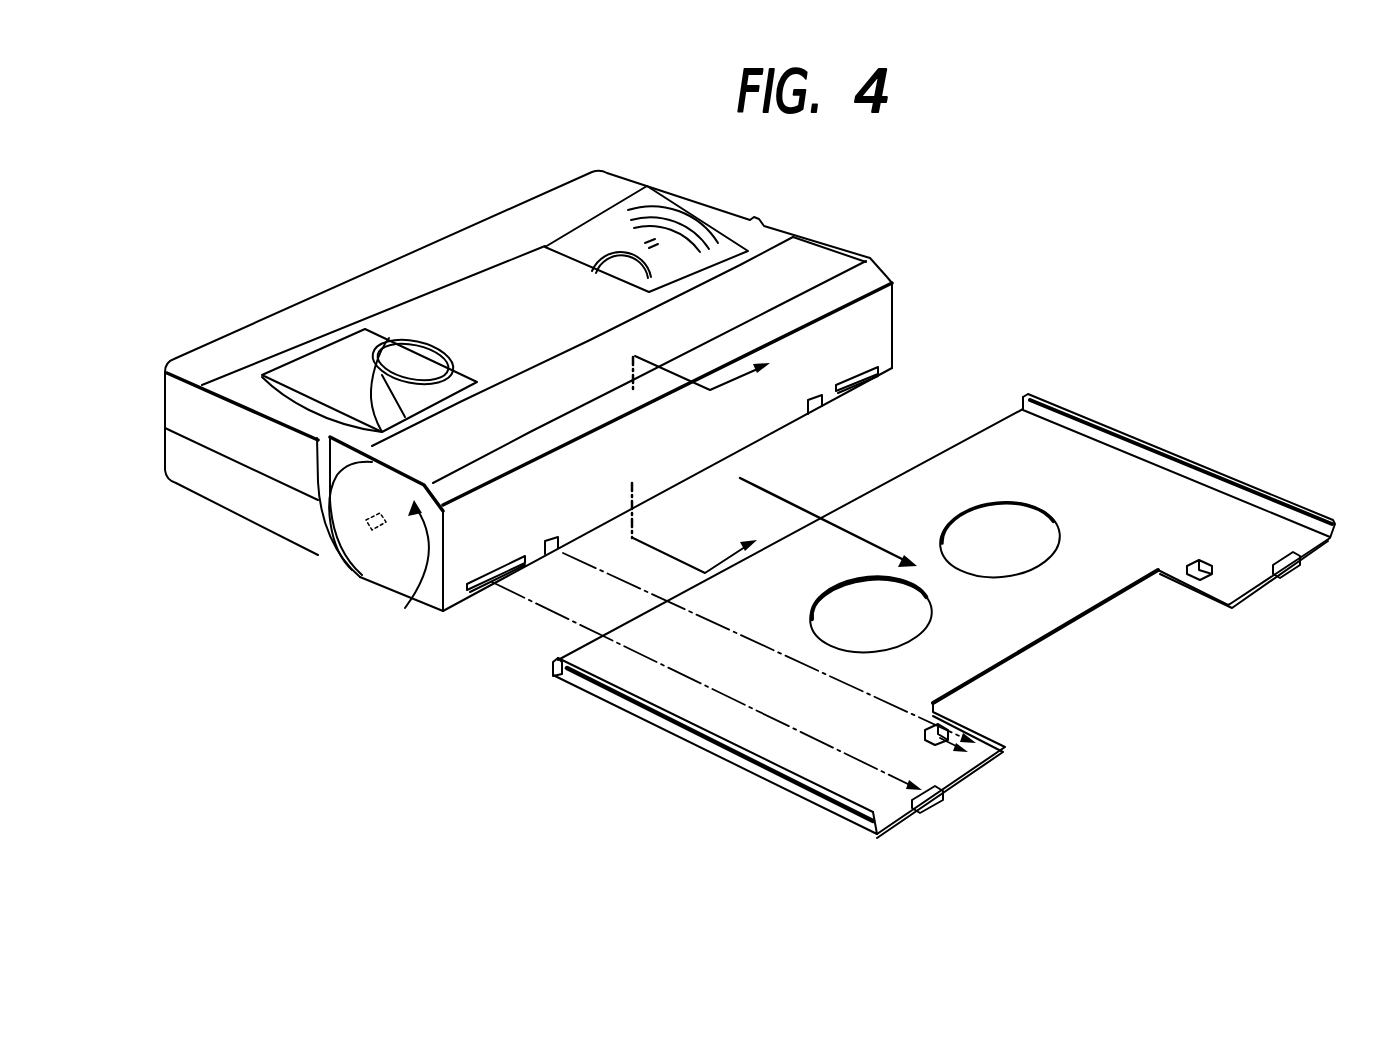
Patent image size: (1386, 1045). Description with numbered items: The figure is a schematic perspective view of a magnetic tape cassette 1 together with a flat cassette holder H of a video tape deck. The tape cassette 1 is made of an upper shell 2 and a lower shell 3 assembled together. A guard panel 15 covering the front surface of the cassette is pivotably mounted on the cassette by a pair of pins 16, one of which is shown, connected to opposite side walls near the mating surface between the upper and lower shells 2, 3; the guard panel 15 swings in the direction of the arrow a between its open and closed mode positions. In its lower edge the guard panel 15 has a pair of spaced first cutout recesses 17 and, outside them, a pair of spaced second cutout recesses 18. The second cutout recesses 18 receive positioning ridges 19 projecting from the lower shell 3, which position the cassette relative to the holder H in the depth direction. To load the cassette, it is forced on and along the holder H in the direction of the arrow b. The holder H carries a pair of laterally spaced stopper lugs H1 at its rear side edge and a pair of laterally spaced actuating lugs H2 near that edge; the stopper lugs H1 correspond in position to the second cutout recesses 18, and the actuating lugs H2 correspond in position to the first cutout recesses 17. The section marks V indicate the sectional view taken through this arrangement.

The magnetic tape cassette 1 is at (527, 417).
The upper shell 2 is at (165, 391).
The lower shell 3 is at (165, 452).
The guard panel 15 is at (643, 475).
The pin 16 is at (377, 531).
The first cutout recess 17 is at (558, 550).
The second cutout recess 18 is at (470, 596).
The positioning ridge 19 is at (492, 583).
The arrow a is at (411, 569).
The arrow b is at (860, 536).
The section line V- V is at (712, 464).
The holder H is at (1157, 448).
The stopper lug H1 is at (918, 797).
The actuating lug H2 is at (930, 728).